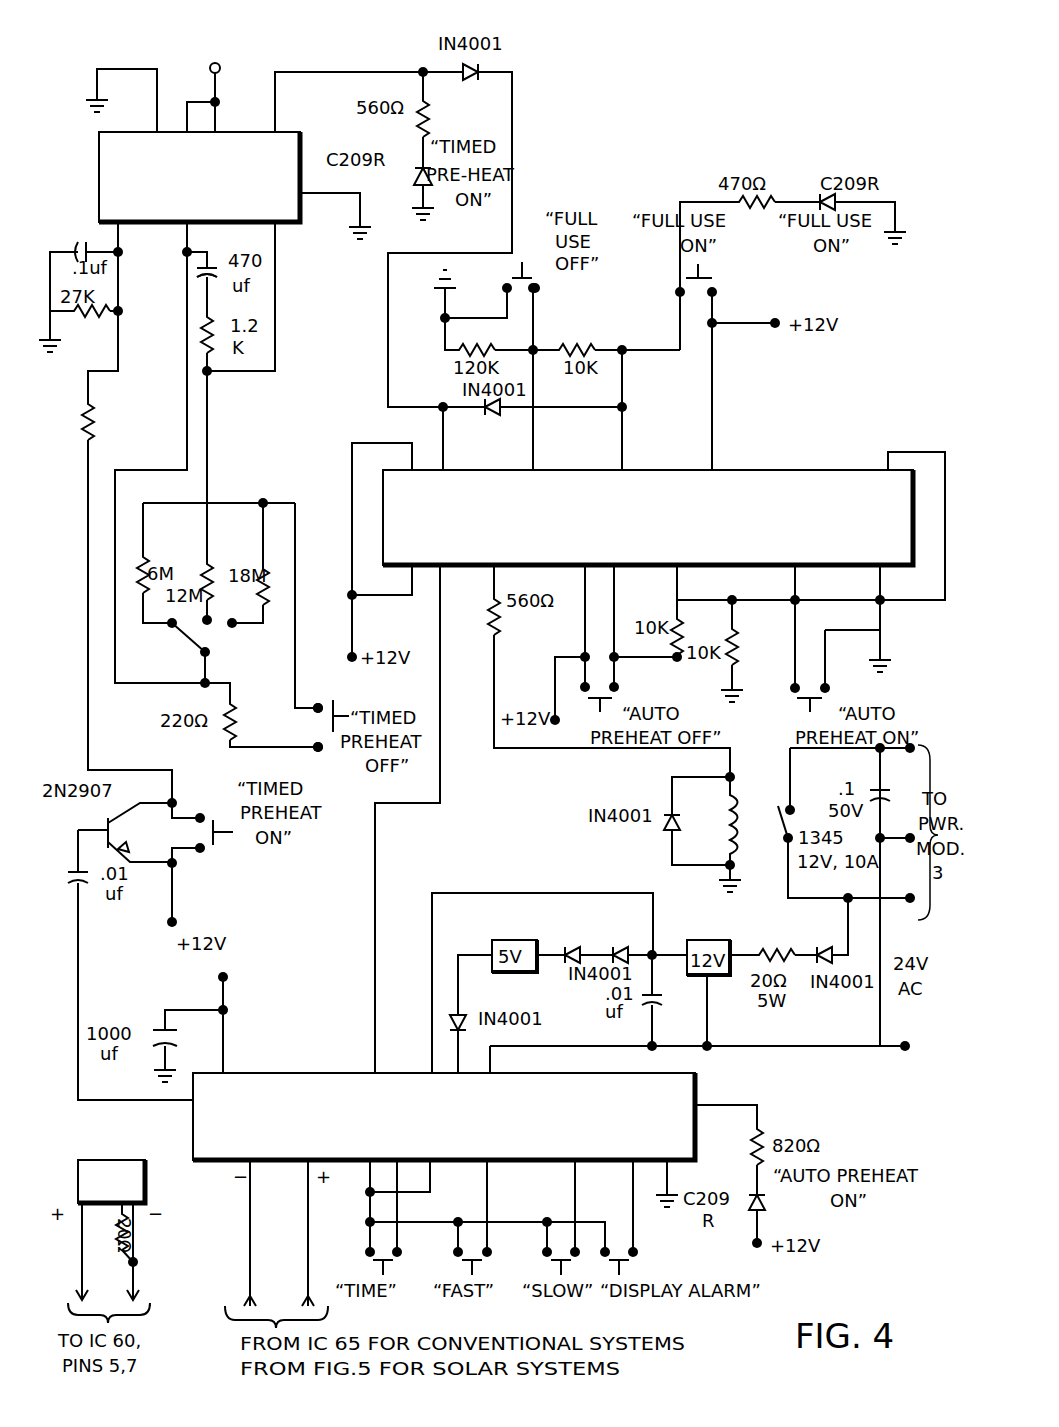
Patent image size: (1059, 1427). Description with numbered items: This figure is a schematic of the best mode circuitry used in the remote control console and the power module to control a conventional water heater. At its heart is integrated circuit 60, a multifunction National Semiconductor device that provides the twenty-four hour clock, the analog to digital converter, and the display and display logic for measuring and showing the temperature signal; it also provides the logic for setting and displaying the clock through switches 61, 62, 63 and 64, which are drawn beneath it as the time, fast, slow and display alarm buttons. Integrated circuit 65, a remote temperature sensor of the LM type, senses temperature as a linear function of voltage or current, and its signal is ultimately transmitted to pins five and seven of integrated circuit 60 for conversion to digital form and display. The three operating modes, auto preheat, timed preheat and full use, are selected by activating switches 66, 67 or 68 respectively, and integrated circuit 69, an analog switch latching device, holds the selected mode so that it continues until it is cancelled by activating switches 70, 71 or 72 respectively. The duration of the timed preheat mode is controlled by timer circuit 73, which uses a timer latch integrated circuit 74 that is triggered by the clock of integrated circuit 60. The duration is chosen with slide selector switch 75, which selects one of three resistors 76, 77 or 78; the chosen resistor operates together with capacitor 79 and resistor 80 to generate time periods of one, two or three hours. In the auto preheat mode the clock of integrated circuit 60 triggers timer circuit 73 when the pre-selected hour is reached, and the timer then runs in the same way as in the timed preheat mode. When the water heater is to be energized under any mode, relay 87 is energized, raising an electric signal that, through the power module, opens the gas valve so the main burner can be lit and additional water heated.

The integrated circuit 60 is at (452, 1120).
The switch 61 is at (370, 1252).
The switch 62 is at (458, 1252).
The switch 63 is at (547, 1252).
The switch 64 is at (633, 1252).
The integrated circuit 65 is at (145, 1182).
The switch 66 is at (825, 688).
The switch 67 is at (200, 848).
The switch 68 is at (712, 292).
The integrated circuit 69 is at (660, 530).
The switch 70 is at (614, 687).
The switch 71 is at (318, 708).
The switch 72 is at (507, 288).
The timer circuit 73 is at (239, 83).
The timer latch integrated circuit 74 is at (252, 196).
The slide selector switch 75 is at (205, 652).
The resistor 76 is at (146, 570).
The resistor 77 is at (210, 570).
The resistor 78 is at (270, 568).
The capacitor 79 is at (207, 273).
The resistor 80 is at (207, 306).
The relay 87 is at (777, 788).